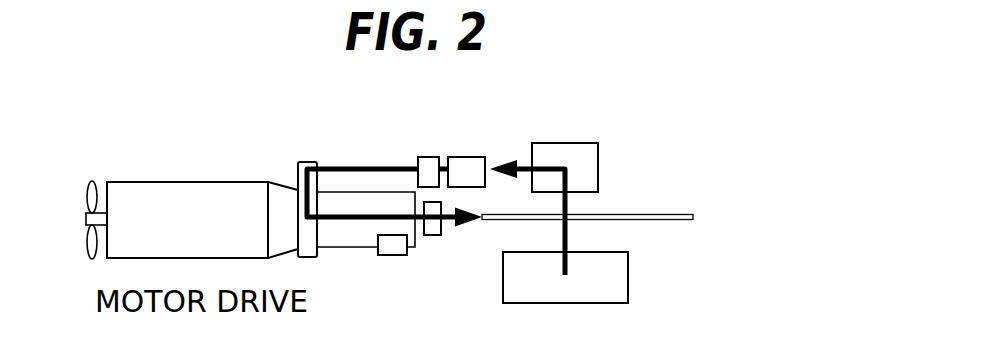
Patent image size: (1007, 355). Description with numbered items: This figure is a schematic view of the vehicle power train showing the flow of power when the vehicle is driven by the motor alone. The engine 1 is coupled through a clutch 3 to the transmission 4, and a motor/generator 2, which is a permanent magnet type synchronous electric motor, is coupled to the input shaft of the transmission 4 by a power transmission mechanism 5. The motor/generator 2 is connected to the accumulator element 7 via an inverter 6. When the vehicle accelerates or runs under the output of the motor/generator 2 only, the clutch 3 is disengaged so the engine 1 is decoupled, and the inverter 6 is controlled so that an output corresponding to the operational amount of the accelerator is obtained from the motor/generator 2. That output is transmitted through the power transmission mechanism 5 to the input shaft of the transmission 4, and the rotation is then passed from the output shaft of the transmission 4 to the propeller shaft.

The engine 1 is at (179, 182).
The motor/generator 2 is at (470, 157).
The clutch 3 is at (277, 182).
The transmission 4 is at (367, 239).
The power transmission mechanism 5 is at (307, 162).
The inverter 6 is at (598, 170).
The accumulator element 7 is at (628, 282).